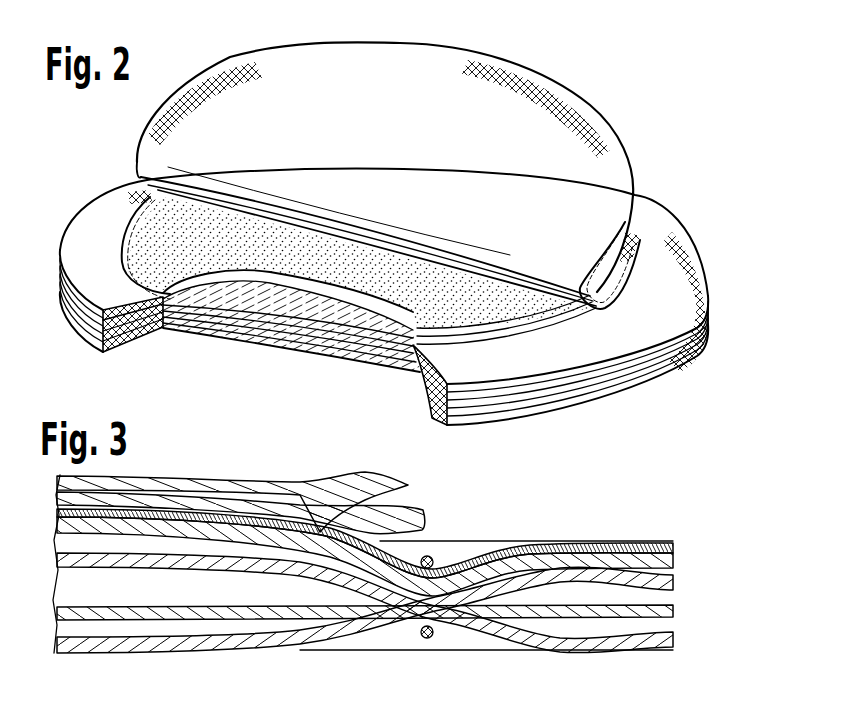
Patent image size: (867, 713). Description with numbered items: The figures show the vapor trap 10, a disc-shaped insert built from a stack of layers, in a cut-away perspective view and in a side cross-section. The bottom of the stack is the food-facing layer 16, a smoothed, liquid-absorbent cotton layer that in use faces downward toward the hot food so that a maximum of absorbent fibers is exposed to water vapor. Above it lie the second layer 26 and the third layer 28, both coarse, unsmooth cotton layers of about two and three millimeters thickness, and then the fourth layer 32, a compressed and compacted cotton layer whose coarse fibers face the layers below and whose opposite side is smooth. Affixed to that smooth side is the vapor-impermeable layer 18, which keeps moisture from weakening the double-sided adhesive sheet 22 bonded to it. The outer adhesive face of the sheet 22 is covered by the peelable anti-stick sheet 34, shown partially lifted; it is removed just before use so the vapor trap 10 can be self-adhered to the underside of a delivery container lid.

In FIG. 2, the vapor trap 10 is at (392, 283).
In FIG. 2, the food-facing layer 16 is at (460, 423).
In FIG. 3, the food-facing layer 16 is at (673, 643).
In FIG. 2, the vapor-impermeable layer 18 is at (603, 370).
In FIG. 3, the vapor-impermeable layer 18 is at (673, 550).
In FIG. 3, the double-sided adhesive sheet 22 is at (417, 517).
In FIG. 2, the second layer 26 is at (497, 410).
In FIG. 3, the second layer 26 is at (673, 610).
In FIG. 2, the third layer 28 is at (533, 397).
In FIG. 3, the third layer 28 is at (673, 585).
In FIG. 2, the fourth layer 32 is at (560, 385).
In FIG. 3, the fourth layer 32 is at (673, 563).
In FIG. 2, the peelable anti-stick sheet 34 is at (420, 52).
In FIG. 3, the peelable anti-stick sheet 34 is at (357, 483).